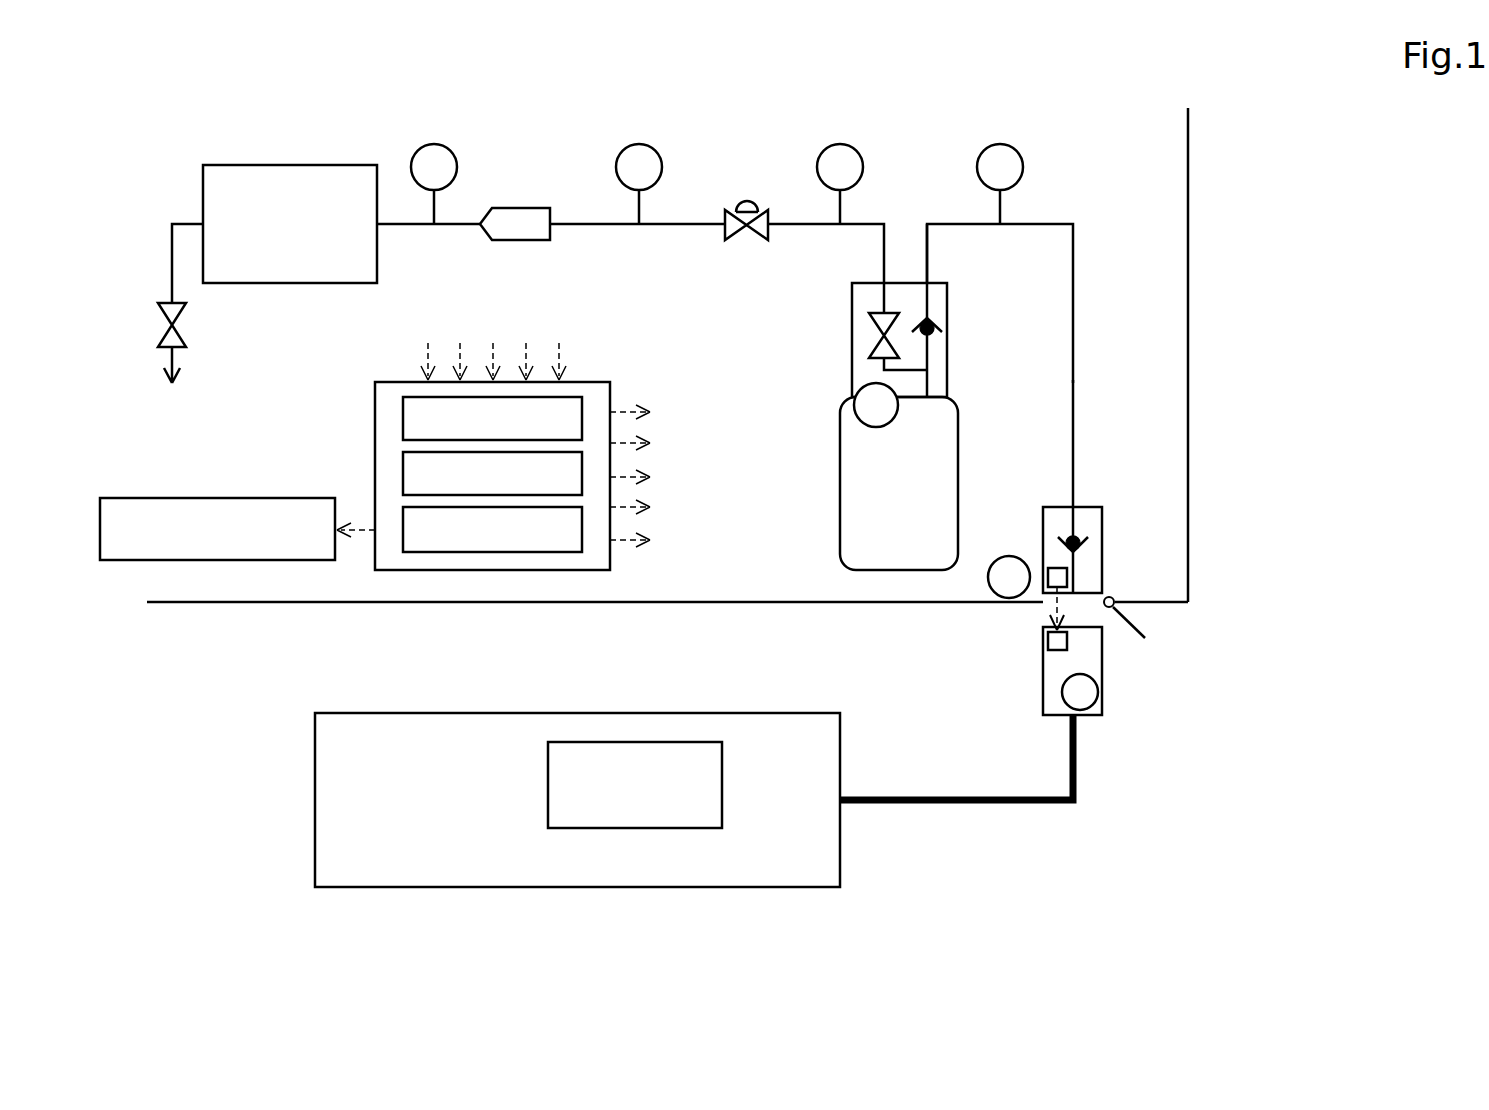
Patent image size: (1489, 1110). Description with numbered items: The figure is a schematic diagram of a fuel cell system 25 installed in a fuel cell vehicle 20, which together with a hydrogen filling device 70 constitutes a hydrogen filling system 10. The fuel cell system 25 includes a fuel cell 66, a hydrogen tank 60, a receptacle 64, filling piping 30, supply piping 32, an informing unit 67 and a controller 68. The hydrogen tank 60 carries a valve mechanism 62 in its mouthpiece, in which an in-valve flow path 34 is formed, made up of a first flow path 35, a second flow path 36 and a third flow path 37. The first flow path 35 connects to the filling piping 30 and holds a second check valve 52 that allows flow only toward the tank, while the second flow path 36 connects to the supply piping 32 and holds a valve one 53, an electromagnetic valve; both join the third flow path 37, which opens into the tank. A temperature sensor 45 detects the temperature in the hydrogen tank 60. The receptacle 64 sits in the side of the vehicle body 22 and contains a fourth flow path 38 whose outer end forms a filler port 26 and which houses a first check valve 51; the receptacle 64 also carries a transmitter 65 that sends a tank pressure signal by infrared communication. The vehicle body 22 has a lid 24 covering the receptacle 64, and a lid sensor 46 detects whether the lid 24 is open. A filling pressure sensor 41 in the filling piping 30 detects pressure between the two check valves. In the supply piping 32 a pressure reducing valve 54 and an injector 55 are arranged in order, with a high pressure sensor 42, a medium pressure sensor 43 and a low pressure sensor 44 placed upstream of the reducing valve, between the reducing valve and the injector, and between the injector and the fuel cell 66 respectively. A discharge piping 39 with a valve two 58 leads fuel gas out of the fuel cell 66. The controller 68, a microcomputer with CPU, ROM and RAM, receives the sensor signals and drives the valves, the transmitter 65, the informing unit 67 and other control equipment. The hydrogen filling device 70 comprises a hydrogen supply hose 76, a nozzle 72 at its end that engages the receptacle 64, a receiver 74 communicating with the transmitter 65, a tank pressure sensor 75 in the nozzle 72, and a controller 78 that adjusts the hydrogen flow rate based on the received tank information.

The hydrogen filling system 10 is at (1293, 127).
The fuel cell vehicle 20 is at (1198, 260).
The vehicle body 22 is at (1188, 310).
The lid 24 is at (1143, 628).
The fuel cell system 25 is at (1115, 93).
The filler port 26 is at (1102, 613).
The filling piping 30 is at (1073, 380).
The supply piping 32 is at (597, 228).
The in-valve flow path 34 is at (760, 290).
The first flow path 35 is at (870, 312).
The second flow path 36 is at (884, 289).
The third flow path 37 is at (890, 372).
The fourth flow path 38 is at (1078, 577).
The discharge piping 39 is at (170, 240).
The filling pressure sensor 41 is at (1000, 144).
The high pressure sensor 42 is at (840, 144).
The medium pressure sensor 43 is at (639, 144).
The low pressure sensor 44 is at (434, 144).
The temperature sensor 45 is at (870, 427).
The lid sensor 46 is at (995, 592).
The first check valve 51 is at (1078, 535).
The second check valve 52 is at (946, 312).
The valve one 53 is at (870, 350).
The pressure reducing valve 54 is at (747, 200).
The injector 55 is at (518, 208).
The valve two 58 is at (186, 322).
The hydrogen tank 60 is at (958, 455).
The valve mechanism 62 is at (947, 355).
The receptacle 64 is at (1102, 550).
The transmitter 65 is at (1057, 568).
The fuel cell 66 is at (286, 165).
The informing unit 67 is at (238, 498).
The controller 68 is at (388, 382).
The hydrogen filling device 70 is at (295, 750).
The nozzle 72 is at (1043, 700).
The receiver 74 is at (1048, 640).
The tank pressure sensor 75 is at (1098, 692).
The hydrogen supply hose 76 is at (1078, 760).
The controller 78 is at (722, 785).